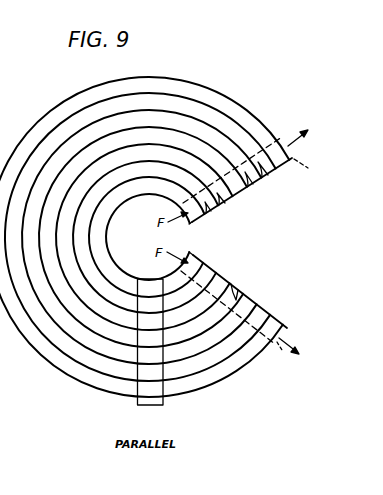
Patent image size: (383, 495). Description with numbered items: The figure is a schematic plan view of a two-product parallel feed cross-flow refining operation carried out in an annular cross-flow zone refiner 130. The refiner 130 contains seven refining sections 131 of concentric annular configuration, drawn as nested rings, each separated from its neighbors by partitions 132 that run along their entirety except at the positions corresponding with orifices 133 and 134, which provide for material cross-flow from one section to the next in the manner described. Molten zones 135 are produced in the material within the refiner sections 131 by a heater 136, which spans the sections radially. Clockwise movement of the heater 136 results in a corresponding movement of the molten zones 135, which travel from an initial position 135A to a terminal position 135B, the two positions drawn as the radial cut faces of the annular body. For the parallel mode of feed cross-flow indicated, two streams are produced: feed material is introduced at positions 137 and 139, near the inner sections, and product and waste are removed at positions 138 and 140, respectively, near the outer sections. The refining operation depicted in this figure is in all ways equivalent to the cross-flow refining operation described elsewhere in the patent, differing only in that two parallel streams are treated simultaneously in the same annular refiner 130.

The cross-flow zone refiner 130 is at (186, 80).
The refining sections 131 is at (225, 207).
The partitions 132 is at (244, 122).
The orifices 133 is at (236, 300).
The orifices 134 is at (247, 176).
The molten zones 135 is at (157, 395).
The initial position 135A is at (286, 326).
The terminal position 135B is at (282, 137).
The heater 136 is at (299, 159).
The feed position 137 is at (184, 260).
The removal position 138 is at (292, 339).
The feed position 139 is at (180, 208).
The removal position 140 is at (294, 150).